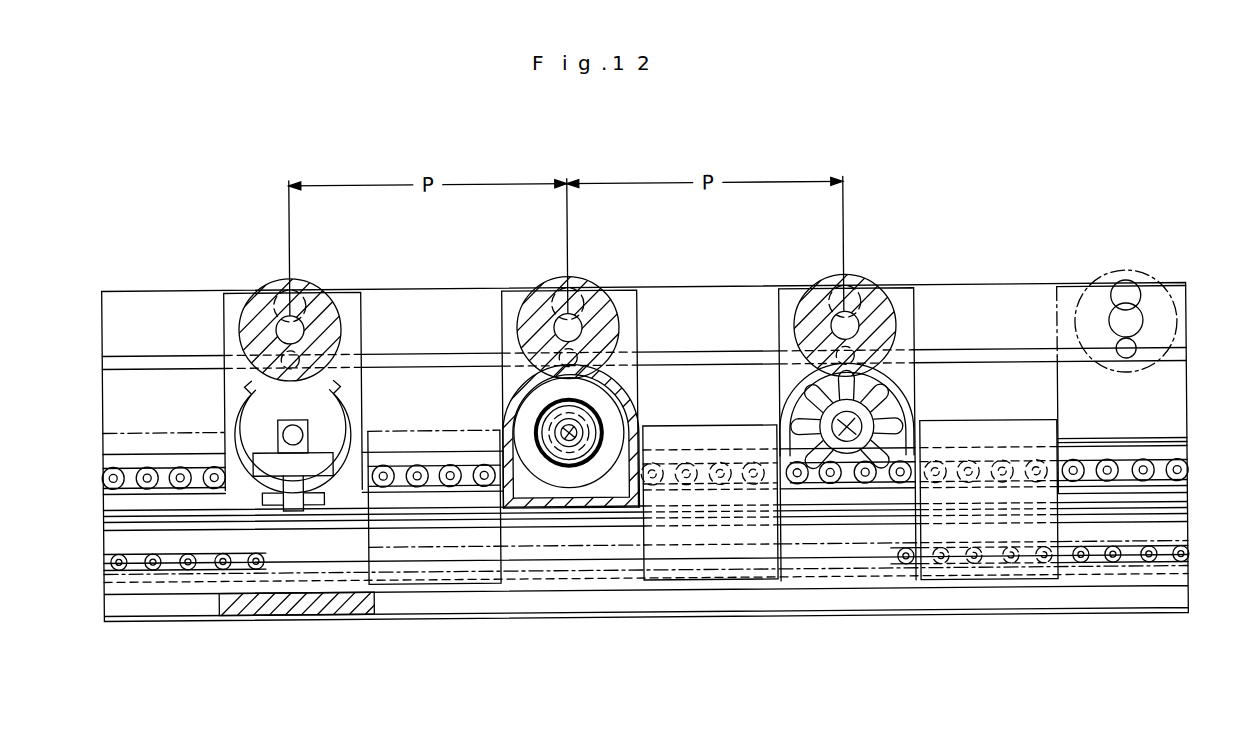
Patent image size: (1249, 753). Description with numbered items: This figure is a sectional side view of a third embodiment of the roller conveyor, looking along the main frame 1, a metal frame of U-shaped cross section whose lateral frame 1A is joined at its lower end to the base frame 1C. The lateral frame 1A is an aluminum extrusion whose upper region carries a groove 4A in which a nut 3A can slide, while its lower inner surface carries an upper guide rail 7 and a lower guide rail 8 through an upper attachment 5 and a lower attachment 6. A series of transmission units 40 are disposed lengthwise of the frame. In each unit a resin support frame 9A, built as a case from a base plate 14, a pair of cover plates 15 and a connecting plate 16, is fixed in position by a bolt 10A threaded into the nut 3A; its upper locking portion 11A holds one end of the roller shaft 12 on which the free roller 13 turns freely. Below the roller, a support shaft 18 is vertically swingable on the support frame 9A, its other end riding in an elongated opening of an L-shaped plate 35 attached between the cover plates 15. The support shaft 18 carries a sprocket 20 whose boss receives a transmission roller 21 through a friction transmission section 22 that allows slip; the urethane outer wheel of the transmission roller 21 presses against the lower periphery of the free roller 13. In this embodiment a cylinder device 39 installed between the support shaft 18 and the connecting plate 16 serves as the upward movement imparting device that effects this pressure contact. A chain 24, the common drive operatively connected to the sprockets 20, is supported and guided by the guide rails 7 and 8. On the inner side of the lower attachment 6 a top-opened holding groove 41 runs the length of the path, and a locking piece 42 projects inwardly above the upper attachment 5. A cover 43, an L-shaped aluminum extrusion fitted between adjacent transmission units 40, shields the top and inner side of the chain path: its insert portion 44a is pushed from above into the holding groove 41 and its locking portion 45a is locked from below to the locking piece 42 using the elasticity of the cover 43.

The main frame 1 is at (1158, 616).
The lateral frame 1A is at (997, 303).
The base frame 1C is at (315, 608).
The nut 3A is at (640, 338).
The groove 4A is at (1018, 355).
The upper attachment 5 is at (130, 508).
The lower attachment 6 is at (1170, 581).
The upper guide rail 7 is at (1170, 491).
The lower guide rail 8 is at (888, 575).
The support frame 9A is at (500, 322).
The bolt 10A is at (305, 356).
The locking portion 11A is at (600, 312).
The roller shaft 12 is at (305, 325).
The free roller 13 is at (555, 300).
The base plate 14 is at (245, 297).
The cover plate 15 is at (603, 422).
The connecting plate 16 is at (590, 507).
The support shaft 18 is at (300, 430).
The sprocket 20 is at (890, 410).
The transmission roller 21 is at (262, 402).
The friction transmission section 22 is at (598, 402).
The chain 24 is at (1110, 552).
The L-shaped plate 35 is at (355, 488).
The cylinder device 39 is at (262, 462).
The transmission unit 40 is at (222, 334).
The holding groove 41 is at (745, 565).
The locking piece 42 is at (1160, 442).
The cover 43 is at (717, 424).
The insert portion 44a is at (1062, 578).
The locking portion 45a is at (972, 444).